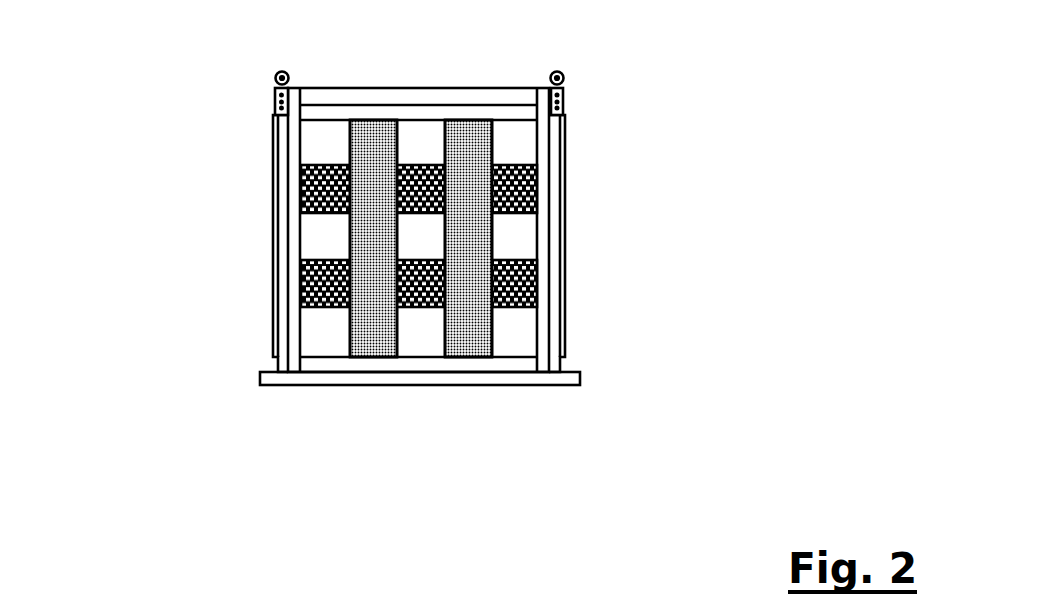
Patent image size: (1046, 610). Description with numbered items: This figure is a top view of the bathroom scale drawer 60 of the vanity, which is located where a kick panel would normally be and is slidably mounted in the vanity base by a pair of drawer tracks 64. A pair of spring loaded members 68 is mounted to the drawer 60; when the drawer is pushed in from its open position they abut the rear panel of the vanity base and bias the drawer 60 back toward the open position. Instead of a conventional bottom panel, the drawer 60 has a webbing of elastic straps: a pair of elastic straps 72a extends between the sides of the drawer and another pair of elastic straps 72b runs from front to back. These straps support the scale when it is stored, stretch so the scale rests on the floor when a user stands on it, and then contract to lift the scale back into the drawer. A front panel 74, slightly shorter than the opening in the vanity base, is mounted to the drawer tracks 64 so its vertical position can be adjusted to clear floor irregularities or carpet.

The bathroom scale drawer 60 is at (202, 343).
The drawer tracks 64 is at (272, 178).
The spring loaded members 68 is at (276, 76).
The elastic straps 72a is at (472, 145).
The elastic straps 72b is at (523, 283).
The front panel 74 is at (405, 385).